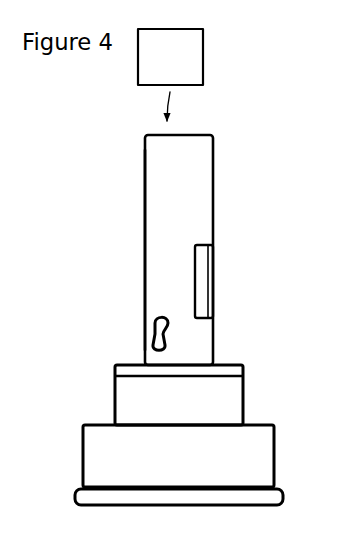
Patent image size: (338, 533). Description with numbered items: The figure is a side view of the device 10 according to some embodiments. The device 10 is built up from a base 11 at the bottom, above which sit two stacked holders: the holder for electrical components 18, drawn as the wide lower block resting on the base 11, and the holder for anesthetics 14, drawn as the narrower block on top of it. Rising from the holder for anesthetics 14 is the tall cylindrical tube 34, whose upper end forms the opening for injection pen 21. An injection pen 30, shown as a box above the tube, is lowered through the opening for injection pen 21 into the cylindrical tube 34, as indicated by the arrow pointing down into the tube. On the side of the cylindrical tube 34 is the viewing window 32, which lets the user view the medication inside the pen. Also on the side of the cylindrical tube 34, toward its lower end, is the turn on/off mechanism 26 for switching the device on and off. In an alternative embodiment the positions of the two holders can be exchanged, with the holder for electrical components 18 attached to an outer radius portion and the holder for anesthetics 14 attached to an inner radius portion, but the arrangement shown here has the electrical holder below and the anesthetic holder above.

The device 10 is at (87, 133).
The injection pen 30 is at (188, 73).
The opening for injection pen 21 is at (206, 130).
The cylindrical tube 34 is at (148, 207).
The turn on/off mechanism 26 is at (213, 300).
The viewing window 32 is at (151, 338).
The holder for anesthetics 14 is at (238, 398).
The holder for electrical components 18 is at (113, 457).
The base 11 is at (283, 495).